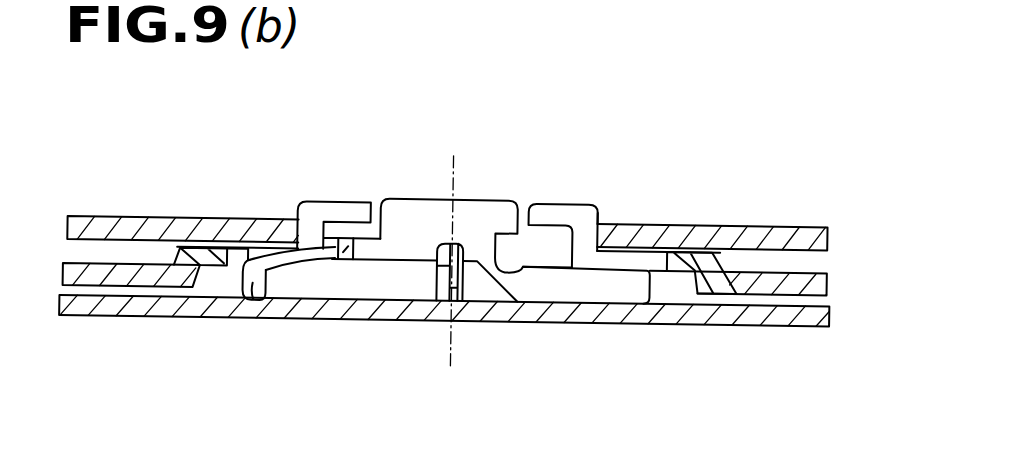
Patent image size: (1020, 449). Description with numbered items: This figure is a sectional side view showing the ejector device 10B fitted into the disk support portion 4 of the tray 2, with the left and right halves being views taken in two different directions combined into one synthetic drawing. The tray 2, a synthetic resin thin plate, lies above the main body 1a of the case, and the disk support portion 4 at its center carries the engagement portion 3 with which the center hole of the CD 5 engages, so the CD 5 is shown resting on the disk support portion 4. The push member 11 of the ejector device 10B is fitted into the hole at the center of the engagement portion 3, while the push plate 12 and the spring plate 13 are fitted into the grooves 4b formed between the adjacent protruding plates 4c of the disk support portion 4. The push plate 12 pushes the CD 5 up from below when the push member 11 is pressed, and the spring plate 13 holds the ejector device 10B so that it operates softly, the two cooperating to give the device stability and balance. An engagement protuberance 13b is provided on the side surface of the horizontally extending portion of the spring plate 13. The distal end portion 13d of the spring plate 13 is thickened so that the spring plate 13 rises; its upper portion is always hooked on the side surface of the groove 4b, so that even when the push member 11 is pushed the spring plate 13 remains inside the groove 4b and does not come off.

The main body 1a is at (817, 311).
The tray 2 is at (810, 281).
The engagement portion 3 is at (601, 213).
The disk support portion 4 is at (180, 263).
The groove 4b is at (252, 259).
The protruding plate 4c is at (553, 207).
The CD 5 is at (813, 231).
The ejector device 10B is at (420, 188).
The push member 11 is at (393, 200).
The push plate 12 is at (580, 285).
The spring plate 13 is at (282, 270).
The engagement protuberance 13b is at (333, 261).
The distal end portion 13d is at (247, 303).